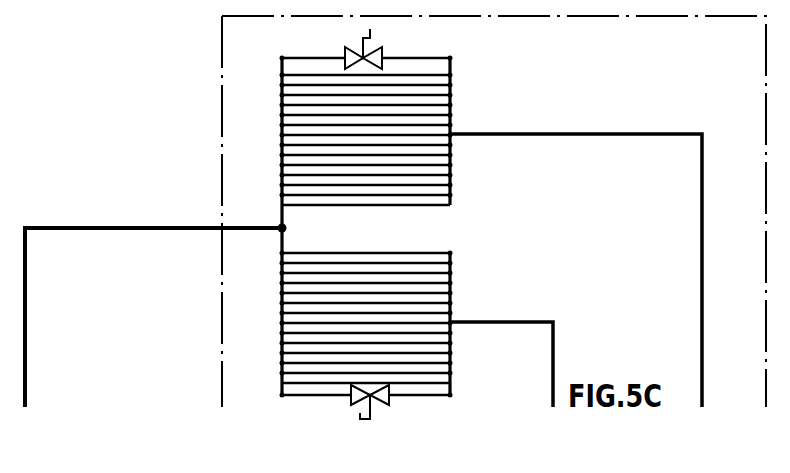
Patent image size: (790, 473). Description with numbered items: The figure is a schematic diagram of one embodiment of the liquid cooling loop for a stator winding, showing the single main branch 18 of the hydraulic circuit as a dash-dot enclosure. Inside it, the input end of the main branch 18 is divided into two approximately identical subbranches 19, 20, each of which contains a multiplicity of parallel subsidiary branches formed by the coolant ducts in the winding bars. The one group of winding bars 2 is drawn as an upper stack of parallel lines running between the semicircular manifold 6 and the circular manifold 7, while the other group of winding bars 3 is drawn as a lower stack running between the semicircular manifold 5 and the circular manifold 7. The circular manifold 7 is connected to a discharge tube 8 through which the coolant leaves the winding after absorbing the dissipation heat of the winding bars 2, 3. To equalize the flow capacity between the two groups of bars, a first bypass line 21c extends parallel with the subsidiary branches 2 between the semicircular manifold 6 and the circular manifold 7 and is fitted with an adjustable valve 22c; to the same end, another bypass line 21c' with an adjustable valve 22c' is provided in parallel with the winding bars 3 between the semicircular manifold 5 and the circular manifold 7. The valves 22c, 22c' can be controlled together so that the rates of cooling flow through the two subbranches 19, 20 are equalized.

The winding bars 2 is at (390, 195).
The winding bars 3 is at (374, 258).
The semicircular manifold 5 is at (452, 358).
The semicircular manifold 6 is at (452, 92).
The circular manifold 7 is at (288, 216).
The discharge tube 8 is at (135, 228).
The main branch 18 is at (221, 346).
The subbranch 19 is at (521, 315).
The subbranch 20 is at (541, 131).
The first bypass line 21c is at (366, 42).
The adjustable valve 22c is at (390, 46).
The bypass line 21c' is at (366, 411).
The adjustable valve 22c' is at (399, 415).